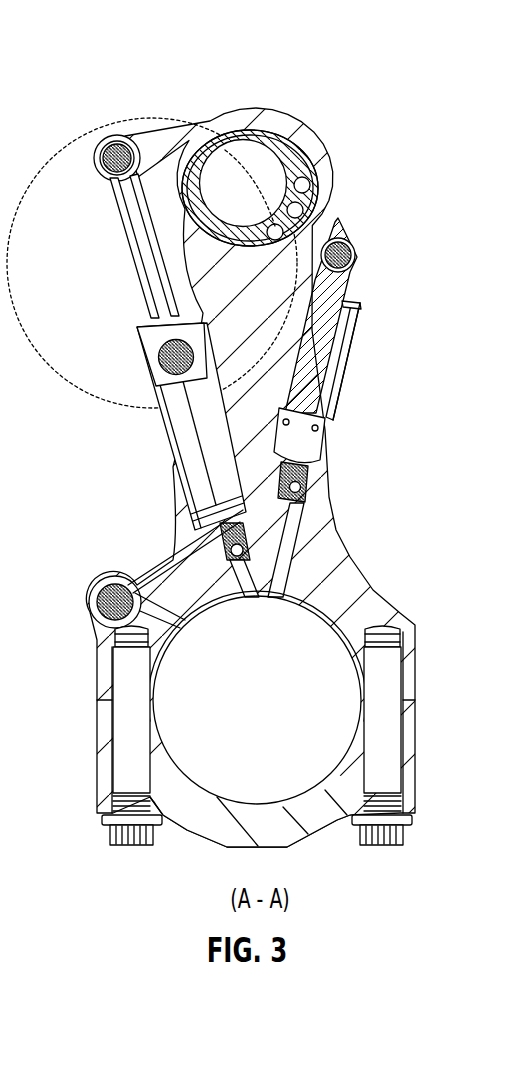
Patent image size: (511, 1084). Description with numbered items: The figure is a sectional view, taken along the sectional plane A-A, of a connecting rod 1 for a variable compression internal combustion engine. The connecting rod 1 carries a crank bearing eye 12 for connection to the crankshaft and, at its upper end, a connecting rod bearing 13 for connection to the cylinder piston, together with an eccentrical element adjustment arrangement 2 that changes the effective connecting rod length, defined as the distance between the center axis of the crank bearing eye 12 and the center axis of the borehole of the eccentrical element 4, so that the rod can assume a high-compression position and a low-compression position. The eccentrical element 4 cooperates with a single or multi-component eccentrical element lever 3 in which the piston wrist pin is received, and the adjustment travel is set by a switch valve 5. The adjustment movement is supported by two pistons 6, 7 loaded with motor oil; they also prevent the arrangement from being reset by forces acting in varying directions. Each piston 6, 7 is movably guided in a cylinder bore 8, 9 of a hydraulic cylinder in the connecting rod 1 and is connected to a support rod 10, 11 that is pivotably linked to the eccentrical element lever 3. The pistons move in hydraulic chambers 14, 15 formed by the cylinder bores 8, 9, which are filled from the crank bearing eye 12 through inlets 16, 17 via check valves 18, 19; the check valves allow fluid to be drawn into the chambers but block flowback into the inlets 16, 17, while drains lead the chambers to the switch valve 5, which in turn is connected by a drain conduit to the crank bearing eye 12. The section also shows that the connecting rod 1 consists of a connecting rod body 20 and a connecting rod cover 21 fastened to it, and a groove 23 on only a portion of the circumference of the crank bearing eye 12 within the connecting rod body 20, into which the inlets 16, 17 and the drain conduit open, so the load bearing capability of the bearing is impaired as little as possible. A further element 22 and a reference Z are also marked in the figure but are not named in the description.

The connecting rod 1 is at (458, 104).
The eccentrical element adjustment arrangement 2 is at (392, 135).
The eccentrical element lever 3 is at (157, 152).
The eccentrical element 4 is at (290, 122).
The switch valve 5 is at (88, 593).
The piston 6 is at (157, 353).
The piston 7 is at (312, 425).
The cylinder bore 8 is at (205, 478).
The cylinder bore 9 is at (355, 354).
The support rod 10 is at (147, 253).
The support rod 11 is at (336, 372).
The crank bearing eye 12 is at (307, 793).
The connecting rod bearing 13 is at (265, 158).
The hydraulic chamber 14 is at (177, 442).
The hydraulic chamber 15 is at (322, 472).
The inlet 16 is at (237, 596).
The inlet 17 is at (282, 551).
The check valve 18 is at (217, 535).
The check valve 19 is at (310, 495).
The connecting rod body 20 is at (383, 593).
The connecting rod cover 21 is at (405, 743).
The bolt 22 is at (112, 643).
The groove 23 is at (320, 620).
The pivot axis Z is at (72, 99).